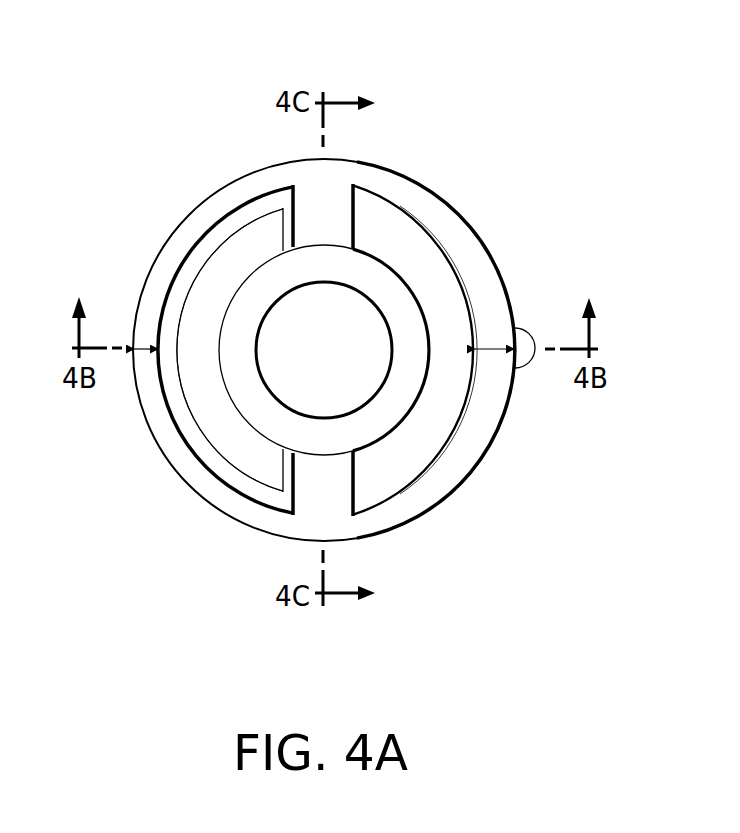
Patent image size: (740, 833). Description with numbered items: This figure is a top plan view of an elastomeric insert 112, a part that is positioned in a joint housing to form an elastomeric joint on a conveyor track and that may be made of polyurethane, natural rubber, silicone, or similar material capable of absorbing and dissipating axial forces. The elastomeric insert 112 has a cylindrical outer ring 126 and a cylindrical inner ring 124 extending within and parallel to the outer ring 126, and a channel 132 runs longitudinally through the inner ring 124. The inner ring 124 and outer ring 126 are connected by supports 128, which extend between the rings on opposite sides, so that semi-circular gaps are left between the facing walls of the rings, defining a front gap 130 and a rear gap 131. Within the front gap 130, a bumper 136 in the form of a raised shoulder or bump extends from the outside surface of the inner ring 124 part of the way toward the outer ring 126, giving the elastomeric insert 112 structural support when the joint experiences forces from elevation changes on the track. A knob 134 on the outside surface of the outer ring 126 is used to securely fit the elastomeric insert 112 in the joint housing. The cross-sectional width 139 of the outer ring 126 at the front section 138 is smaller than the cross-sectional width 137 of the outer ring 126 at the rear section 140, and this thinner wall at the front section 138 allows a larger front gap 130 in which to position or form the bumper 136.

The elastomeric insert 112 is at (556, 65).
The inner ring 124 is at (387, 292).
The outer ring 126 is at (473, 430).
The supports 128 is at (340, 218).
The front gap 130 is at (287, 198).
The rear gap 131 is at (417, 443).
The channel 132 is at (288, 375).
The knob 134 is at (520, 333).
The bumper 136 is at (217, 278).
The cross-sectional width of the outer ring at the rear section 137 is at (492, 352).
The front section 138 is at (148, 405).
The cross-sectional width of the outer ring at the front section 139 is at (143, 343).
The rear section 140 is at (492, 413).